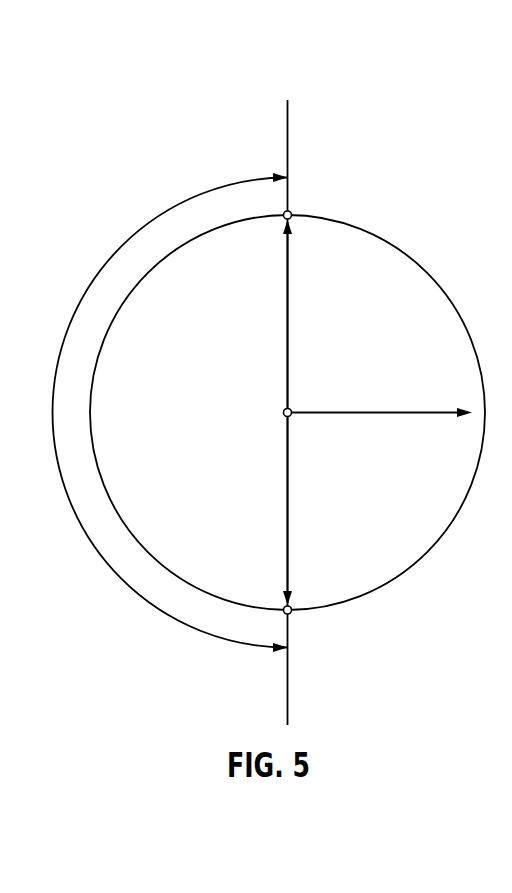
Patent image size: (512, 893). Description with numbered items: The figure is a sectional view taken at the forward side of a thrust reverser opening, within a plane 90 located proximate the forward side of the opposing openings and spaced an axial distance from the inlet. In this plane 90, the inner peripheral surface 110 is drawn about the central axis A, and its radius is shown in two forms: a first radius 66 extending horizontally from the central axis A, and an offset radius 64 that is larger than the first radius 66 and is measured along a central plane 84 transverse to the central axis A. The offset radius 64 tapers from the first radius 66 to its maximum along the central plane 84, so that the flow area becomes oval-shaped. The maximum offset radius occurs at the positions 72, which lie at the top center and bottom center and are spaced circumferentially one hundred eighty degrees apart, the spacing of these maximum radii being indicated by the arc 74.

The plane 90 is at (378, 75).
The central plane 84 is at (288, 118).
The maximum offset radius positions 72 is at (293, 205).
The inner peripheral surface 110 is at (417, 269).
The offset radius 64 is at (288, 309).
The first radius 66 is at (398, 414).
The circumferential spacing of the maximum radii 74 is at (160, 613).
The central axis A is at (283, 412).